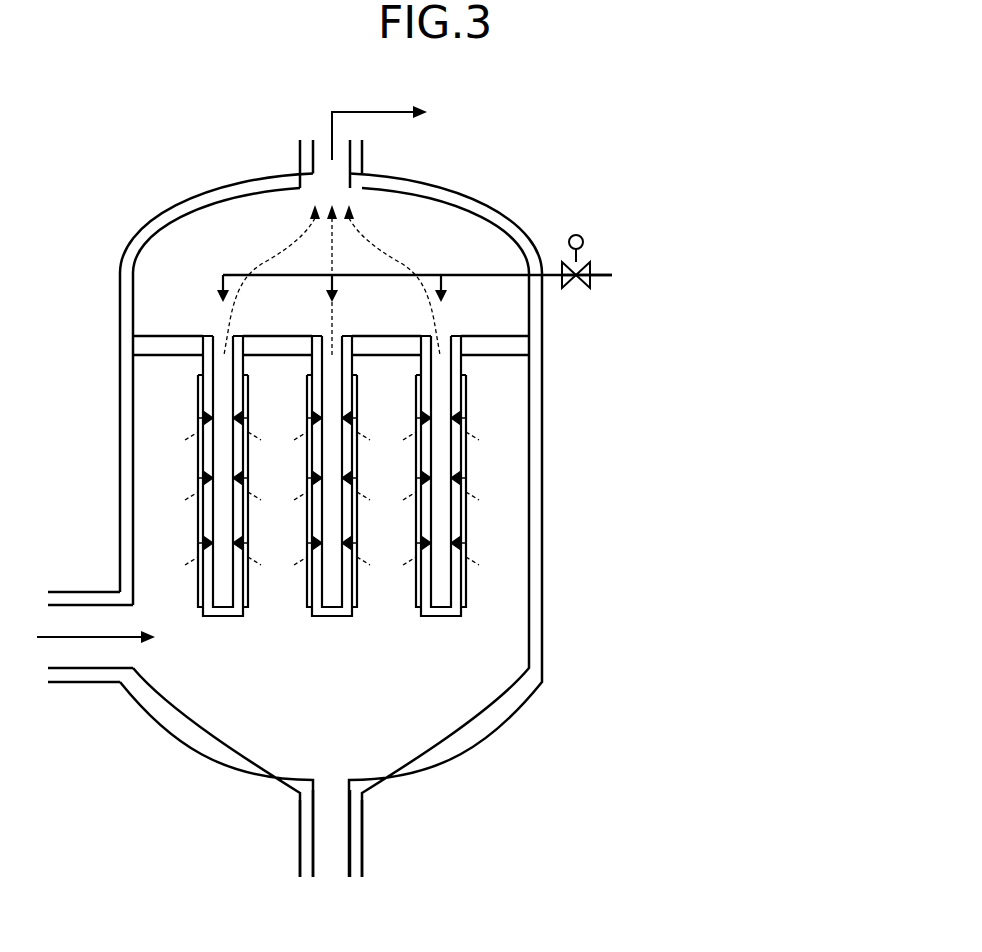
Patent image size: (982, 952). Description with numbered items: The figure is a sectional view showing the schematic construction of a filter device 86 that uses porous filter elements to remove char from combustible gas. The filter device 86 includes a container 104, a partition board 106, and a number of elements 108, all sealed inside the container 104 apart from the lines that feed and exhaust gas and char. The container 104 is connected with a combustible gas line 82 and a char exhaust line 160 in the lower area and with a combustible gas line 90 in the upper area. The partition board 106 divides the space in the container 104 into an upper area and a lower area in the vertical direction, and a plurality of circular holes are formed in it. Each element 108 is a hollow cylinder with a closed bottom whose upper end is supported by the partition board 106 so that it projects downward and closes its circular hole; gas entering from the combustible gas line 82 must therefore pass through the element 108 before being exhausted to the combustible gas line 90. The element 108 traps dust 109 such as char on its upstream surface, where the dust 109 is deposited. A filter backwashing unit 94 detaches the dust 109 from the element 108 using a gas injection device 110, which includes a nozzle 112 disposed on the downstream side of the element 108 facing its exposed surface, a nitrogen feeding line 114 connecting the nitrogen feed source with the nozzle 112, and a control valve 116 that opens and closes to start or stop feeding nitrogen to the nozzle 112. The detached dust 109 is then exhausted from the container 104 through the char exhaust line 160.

The combustible gas line 82 is at (80, 593).
The filter device 86 is at (124, 196).
The combustible gas line 90 is at (363, 153).
The filter backwashing unit 94 is at (640, 140).
The container 104 is at (541, 428).
The partition board 106 is at (508, 343).
The element 108 is at (473, 645).
The dust 109 is at (202, 463).
The gas injection device 110 is at (571, 177).
The nozzle 112 is at (221, 277).
The nitrogen feeding line 114 is at (548, 266).
The control valve 116 is at (584, 241).
The char exhaust line 160 is at (363, 835).